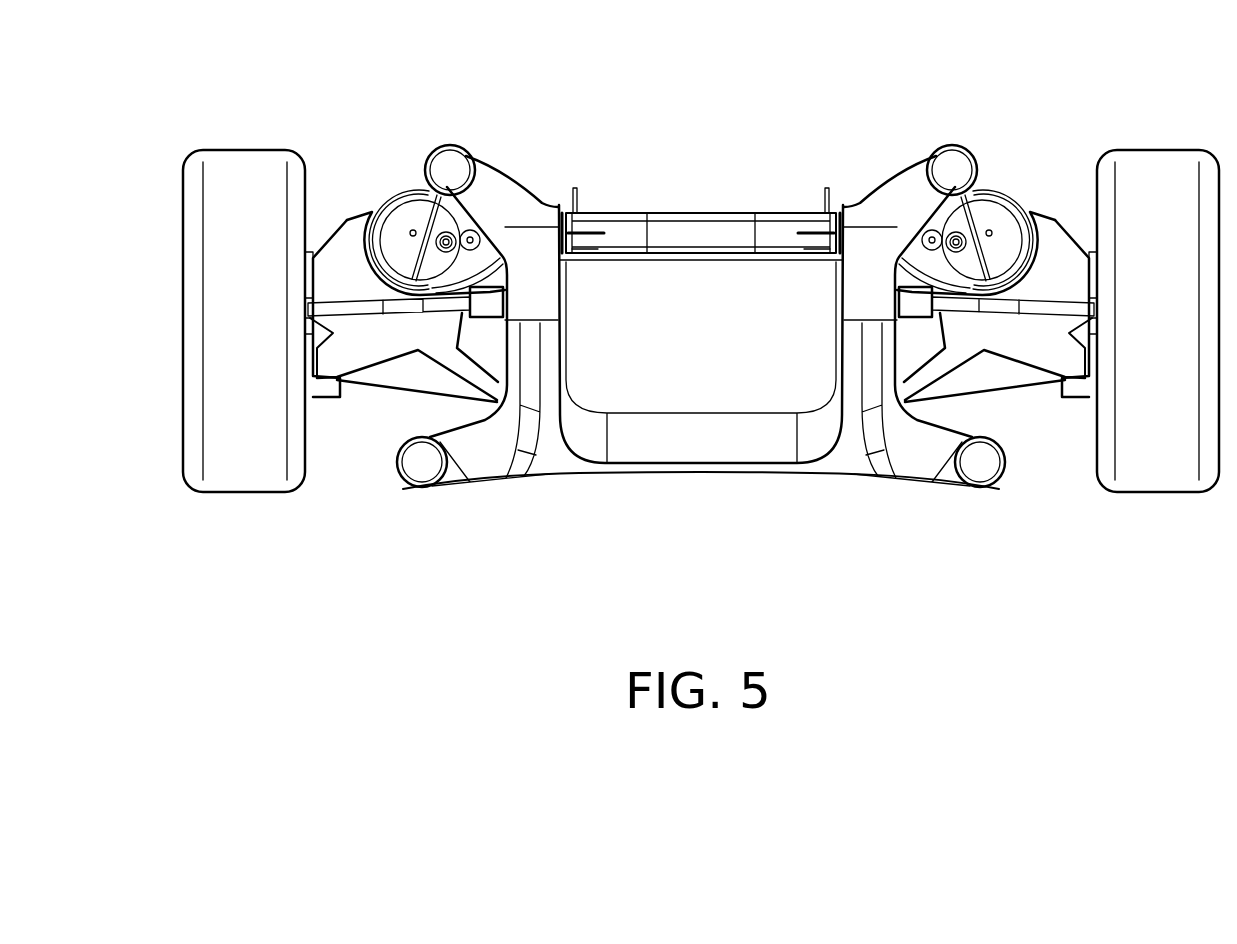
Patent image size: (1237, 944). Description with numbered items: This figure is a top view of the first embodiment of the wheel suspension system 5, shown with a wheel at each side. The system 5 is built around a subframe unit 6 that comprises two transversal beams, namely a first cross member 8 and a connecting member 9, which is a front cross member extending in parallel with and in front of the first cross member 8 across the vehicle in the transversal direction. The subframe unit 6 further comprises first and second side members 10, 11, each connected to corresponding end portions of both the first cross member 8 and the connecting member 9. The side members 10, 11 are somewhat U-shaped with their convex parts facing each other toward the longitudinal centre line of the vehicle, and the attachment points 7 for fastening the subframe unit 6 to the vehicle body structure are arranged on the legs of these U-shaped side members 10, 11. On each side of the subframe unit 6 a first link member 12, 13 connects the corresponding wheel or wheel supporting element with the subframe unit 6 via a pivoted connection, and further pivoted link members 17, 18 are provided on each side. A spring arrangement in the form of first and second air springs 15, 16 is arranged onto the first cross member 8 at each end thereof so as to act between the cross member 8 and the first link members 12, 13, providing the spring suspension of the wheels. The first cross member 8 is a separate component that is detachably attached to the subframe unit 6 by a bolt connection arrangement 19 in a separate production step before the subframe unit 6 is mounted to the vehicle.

The system 5 is at (532, 538).
The subframe unit 6 is at (838, 538).
The attachment points 7 is at (950, 178).
The first cross member 8 is at (708, 232).
The connecting member 9 is at (712, 438).
The first side member 10 is at (528, 256).
The second side member 11 is at (882, 252).
The first link member 12 is at (346, 260).
The first link member 13 is at (1058, 247).
The first air spring 15 is at (415, 217).
The second air spring 16 is at (987, 215).
The pivoted link member 17 is at (1007, 382).
The pivoted link member 18 is at (1035, 310).
The bolt connection arrangement 19 is at (590, 222).